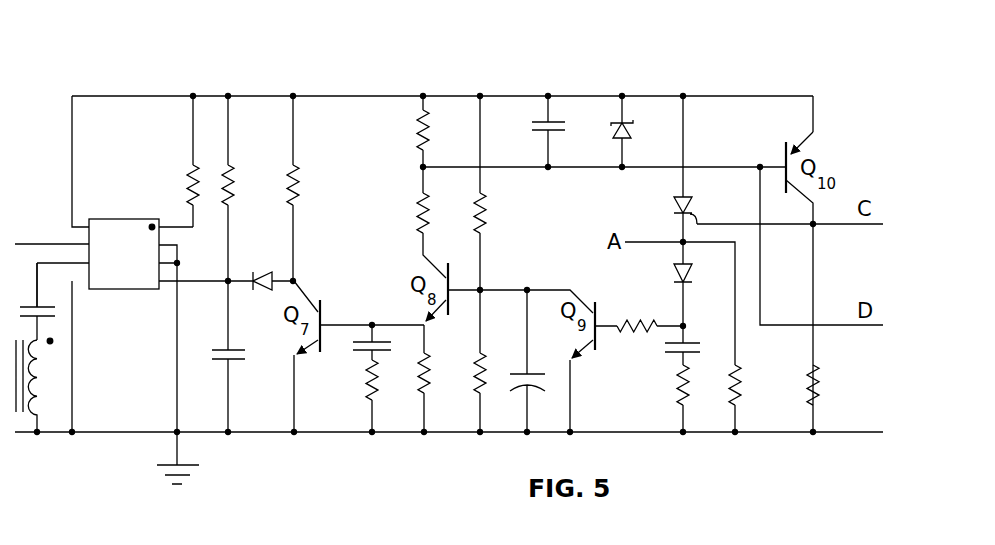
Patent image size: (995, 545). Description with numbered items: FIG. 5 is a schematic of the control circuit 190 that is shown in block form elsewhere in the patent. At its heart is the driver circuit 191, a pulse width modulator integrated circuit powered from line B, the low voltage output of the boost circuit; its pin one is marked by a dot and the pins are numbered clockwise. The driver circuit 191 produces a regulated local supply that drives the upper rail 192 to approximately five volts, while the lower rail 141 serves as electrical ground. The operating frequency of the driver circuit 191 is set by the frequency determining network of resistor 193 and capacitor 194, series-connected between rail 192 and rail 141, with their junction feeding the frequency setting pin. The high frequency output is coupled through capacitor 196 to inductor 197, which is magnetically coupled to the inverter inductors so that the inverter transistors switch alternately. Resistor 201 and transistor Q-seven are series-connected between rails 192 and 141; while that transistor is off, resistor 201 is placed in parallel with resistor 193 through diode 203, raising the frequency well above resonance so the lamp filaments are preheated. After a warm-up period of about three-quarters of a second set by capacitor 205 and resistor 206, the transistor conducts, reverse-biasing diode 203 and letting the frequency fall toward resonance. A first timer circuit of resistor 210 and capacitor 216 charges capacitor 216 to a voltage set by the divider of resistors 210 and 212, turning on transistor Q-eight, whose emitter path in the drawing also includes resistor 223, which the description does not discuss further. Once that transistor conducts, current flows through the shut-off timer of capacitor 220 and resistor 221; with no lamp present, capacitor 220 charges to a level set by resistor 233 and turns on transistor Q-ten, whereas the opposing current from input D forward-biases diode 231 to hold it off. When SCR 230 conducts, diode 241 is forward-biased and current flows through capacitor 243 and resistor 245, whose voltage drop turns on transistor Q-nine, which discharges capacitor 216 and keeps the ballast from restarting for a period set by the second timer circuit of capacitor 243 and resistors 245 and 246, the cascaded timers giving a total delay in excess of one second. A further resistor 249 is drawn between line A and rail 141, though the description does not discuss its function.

The rail 141 is at (408, 432).
The control circuit 190 is at (158, 88).
The driver circuit 191 is at (143, 218).
The rail 192 is at (523, 96).
The resistor 193 is at (243, 200).
The capacitor 194 is at (247, 357).
The capacitor 196 is at (57, 310).
The inductor 197 is at (45, 368).
The resistor 201 is at (300, 186).
The diode 203 is at (257, 277).
The capacitor 205 is at (355, 348).
The resistor 206 is at (366, 404).
The resistor 210 is at (488, 212).
The resistor 212 is at (490, 372).
The capacitor 216 is at (547, 378).
The capacitor 220 is at (535, 125).
The resistor 221 is at (418, 210).
The resistor 223 is at (432, 372).
The SCR 230 is at (676, 211).
The diode 231 is at (614, 125).
The resistor 233 is at (418, 127).
The diode 241 is at (672, 268).
The capacitor 243 is at (665, 347).
The resistor 245 is at (675, 394).
The resistor 246 is at (656, 323).
The resistor 249 is at (745, 376).